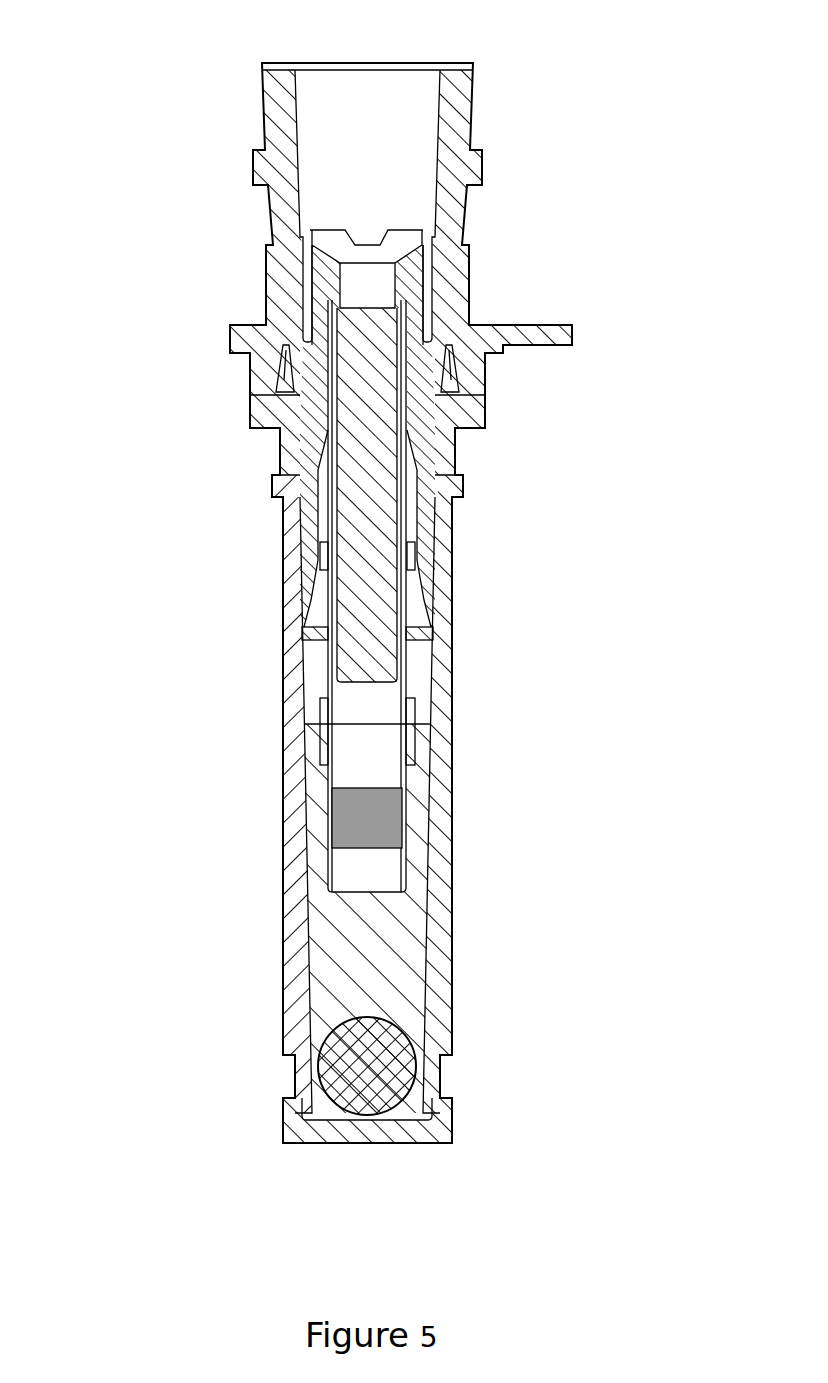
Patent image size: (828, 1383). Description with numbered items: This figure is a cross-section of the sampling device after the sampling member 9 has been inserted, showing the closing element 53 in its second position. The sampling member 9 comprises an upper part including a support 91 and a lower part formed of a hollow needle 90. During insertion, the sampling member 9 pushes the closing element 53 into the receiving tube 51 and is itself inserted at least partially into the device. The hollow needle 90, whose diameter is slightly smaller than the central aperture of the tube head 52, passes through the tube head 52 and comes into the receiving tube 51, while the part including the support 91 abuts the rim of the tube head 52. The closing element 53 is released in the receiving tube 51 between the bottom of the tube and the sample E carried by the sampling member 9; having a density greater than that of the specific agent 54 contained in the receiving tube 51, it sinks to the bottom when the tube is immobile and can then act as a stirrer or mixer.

The sampling member 9 is at (262, 107).
The support 91 is at (535, 325).
The tube head 52 is at (261, 417).
The receiving tube 51 is at (286, 685).
The hollow needle 90 is at (406, 731).
The specific agent 54 is at (385, 985).
The sample E is at (372, 830).
The closing element 53 is at (385, 1087).